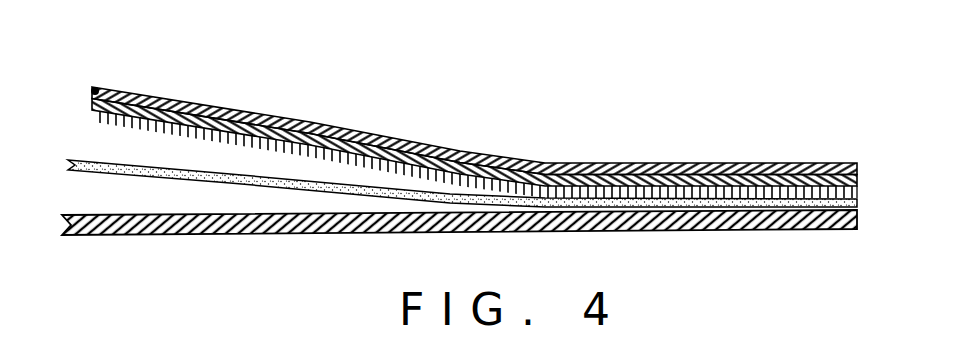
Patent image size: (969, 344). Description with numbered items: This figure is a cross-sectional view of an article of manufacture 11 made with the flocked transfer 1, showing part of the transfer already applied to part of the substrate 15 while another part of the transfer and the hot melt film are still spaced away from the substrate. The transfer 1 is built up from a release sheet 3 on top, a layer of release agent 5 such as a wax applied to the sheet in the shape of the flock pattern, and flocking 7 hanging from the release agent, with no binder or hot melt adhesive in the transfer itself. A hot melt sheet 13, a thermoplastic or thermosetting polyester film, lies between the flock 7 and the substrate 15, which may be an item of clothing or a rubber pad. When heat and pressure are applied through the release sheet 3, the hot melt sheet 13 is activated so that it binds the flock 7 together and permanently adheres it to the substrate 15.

The flocked transfer 1 is at (450, 118).
The release sheet 3 is at (93, 87).
The release agent 5 is at (92, 102).
The flocking 7 is at (127, 120).
The article of manufacture 11 is at (450, 159).
The hot melt sheet 13 is at (111, 173).
The substrate 15 is at (258, 235).